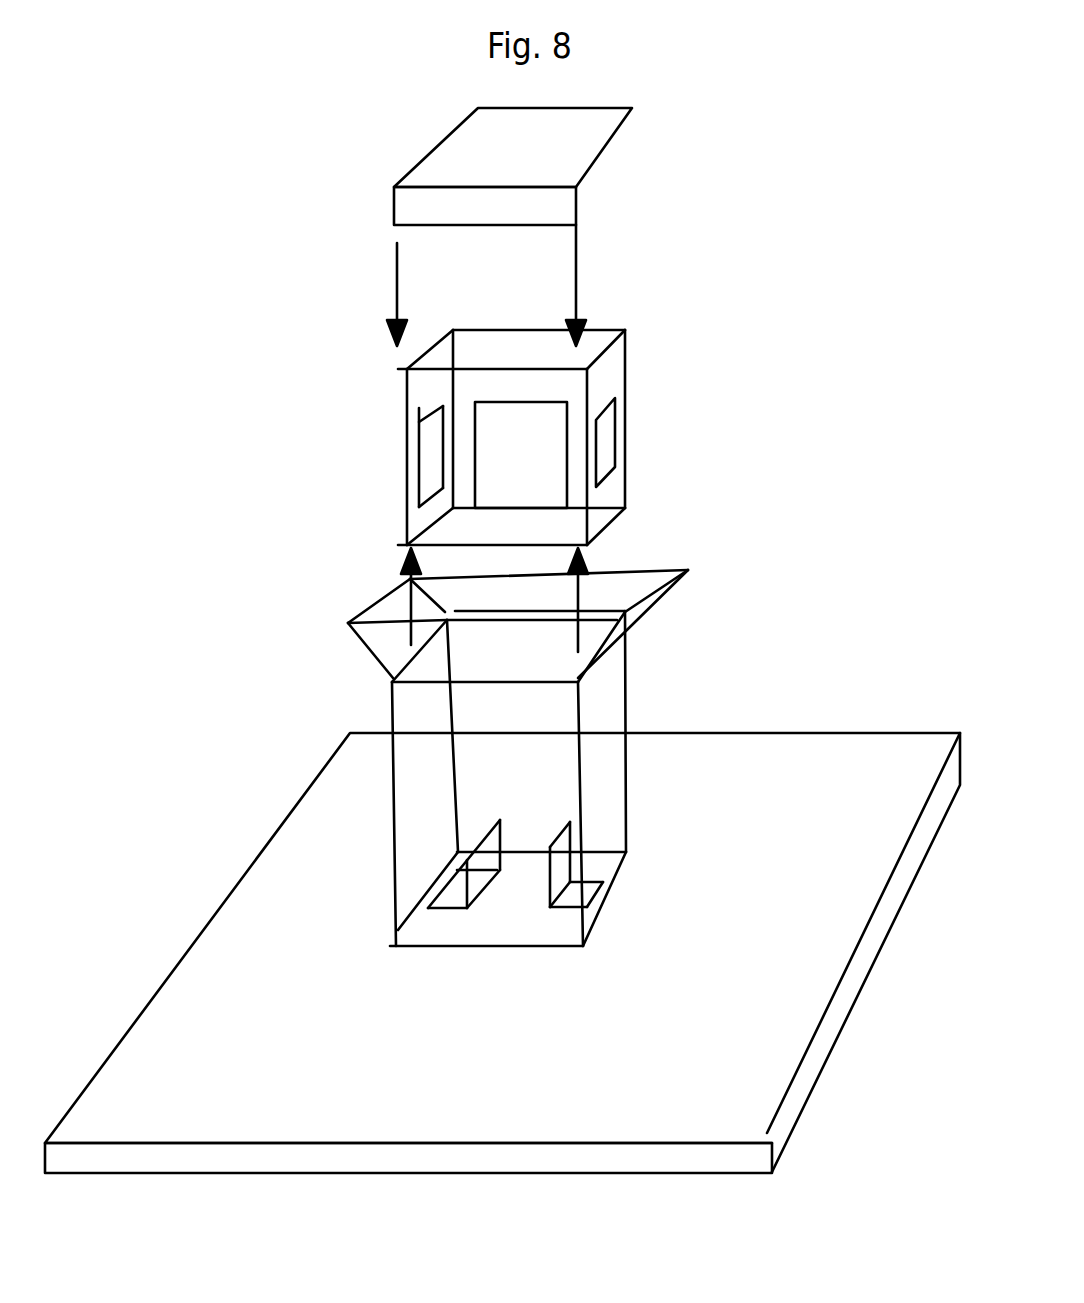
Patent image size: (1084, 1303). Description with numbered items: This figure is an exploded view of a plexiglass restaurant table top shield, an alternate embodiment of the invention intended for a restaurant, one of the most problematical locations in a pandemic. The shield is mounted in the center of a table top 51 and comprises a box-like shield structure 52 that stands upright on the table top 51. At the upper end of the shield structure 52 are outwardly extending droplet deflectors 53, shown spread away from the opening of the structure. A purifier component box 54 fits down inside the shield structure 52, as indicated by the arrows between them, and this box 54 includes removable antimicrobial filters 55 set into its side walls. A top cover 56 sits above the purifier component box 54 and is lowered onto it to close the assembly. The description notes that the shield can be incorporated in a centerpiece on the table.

The table top 51 is at (733, 763).
The box-like shield structure 52 is at (608, 795).
The droplet deflectors 53 is at (658, 602).
The purifier component box 54 is at (603, 372).
The removable antimicrobial filters 55 is at (426, 446).
The top cover 56 is at (582, 138).